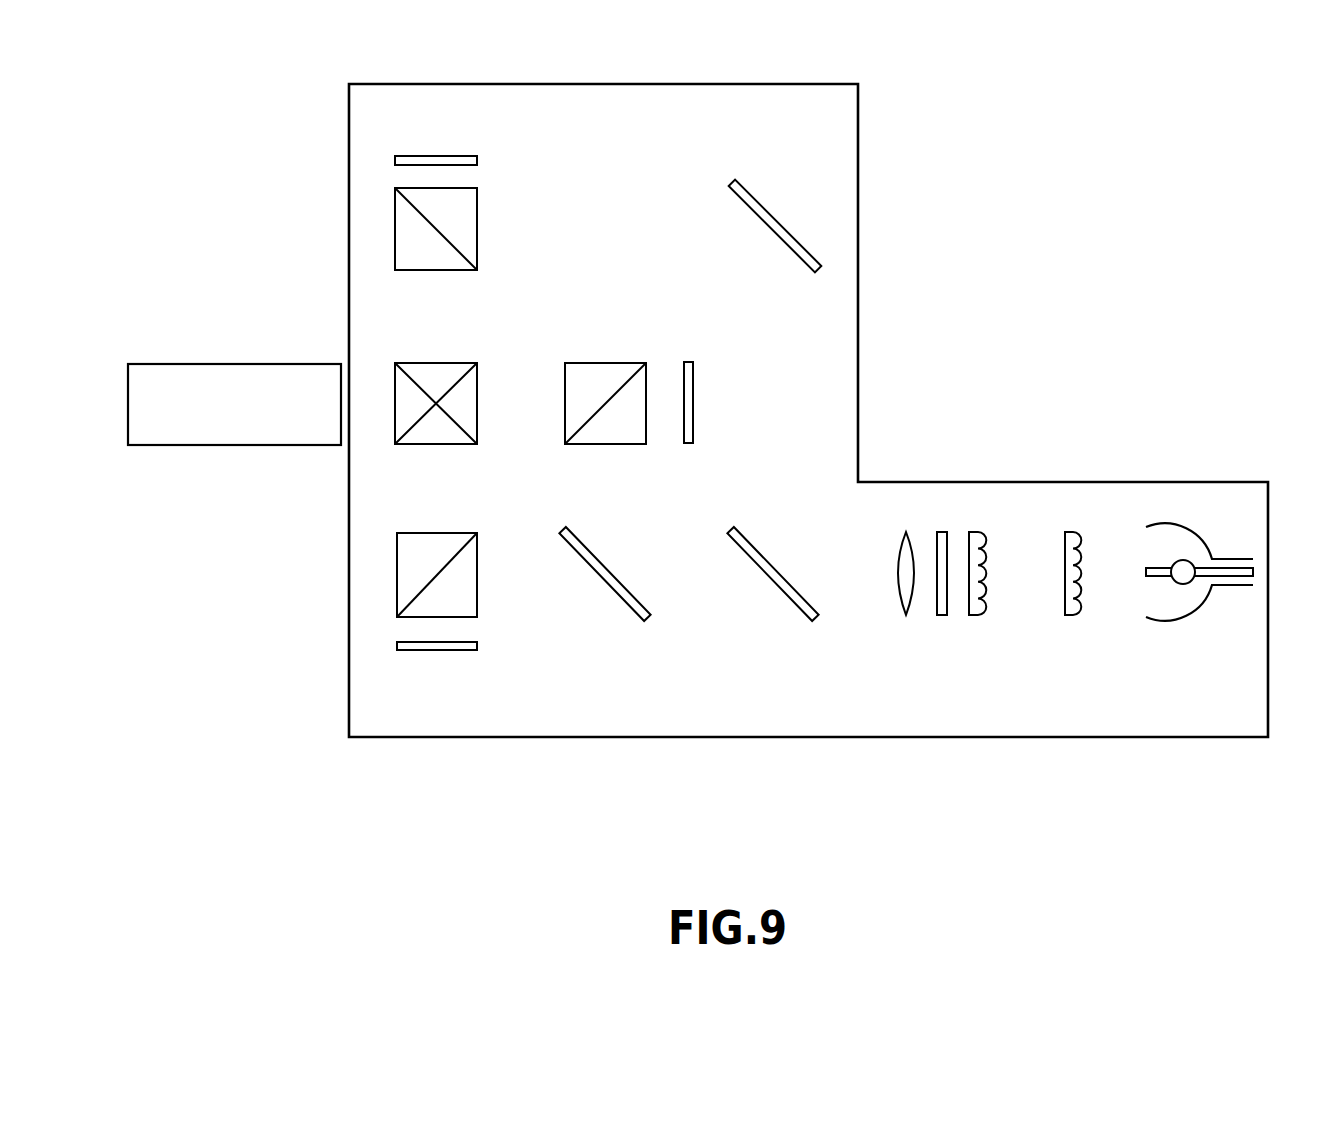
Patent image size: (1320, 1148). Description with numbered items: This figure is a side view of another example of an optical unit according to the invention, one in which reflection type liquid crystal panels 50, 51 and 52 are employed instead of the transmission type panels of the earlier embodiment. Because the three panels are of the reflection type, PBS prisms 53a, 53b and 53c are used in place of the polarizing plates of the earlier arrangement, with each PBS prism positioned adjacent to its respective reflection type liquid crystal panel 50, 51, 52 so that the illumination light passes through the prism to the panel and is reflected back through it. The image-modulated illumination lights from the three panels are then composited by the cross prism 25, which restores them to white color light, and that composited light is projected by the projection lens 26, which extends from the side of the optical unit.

The projection lens 26 is at (148, 372).
The cross prism 25 is at (449, 362).
The reflection type liquid crystal panel 50 is at (397, 643).
The reflection type liquid crystal panel 51 is at (694, 392).
The reflection type liquid crystal panel 52 is at (395, 160).
The PBS prism 53a is at (397, 558).
The PBS prism 53b is at (591, 362).
The PBS prism 53c is at (395, 243).